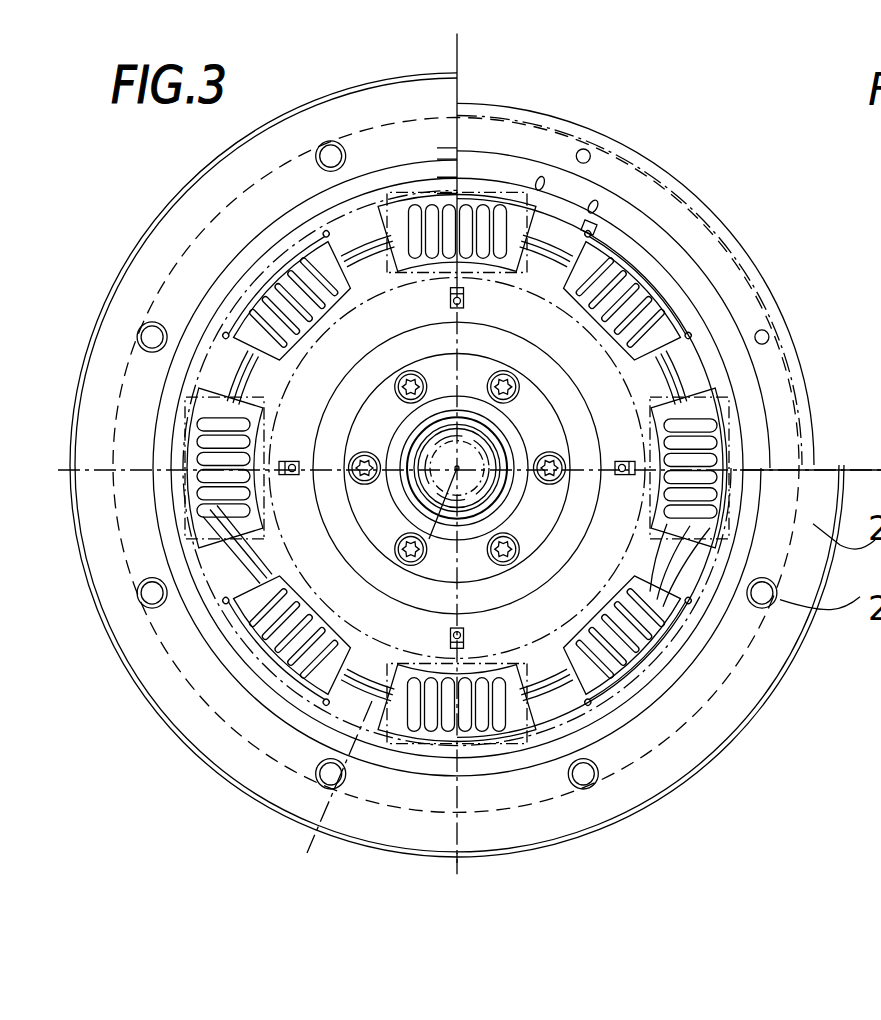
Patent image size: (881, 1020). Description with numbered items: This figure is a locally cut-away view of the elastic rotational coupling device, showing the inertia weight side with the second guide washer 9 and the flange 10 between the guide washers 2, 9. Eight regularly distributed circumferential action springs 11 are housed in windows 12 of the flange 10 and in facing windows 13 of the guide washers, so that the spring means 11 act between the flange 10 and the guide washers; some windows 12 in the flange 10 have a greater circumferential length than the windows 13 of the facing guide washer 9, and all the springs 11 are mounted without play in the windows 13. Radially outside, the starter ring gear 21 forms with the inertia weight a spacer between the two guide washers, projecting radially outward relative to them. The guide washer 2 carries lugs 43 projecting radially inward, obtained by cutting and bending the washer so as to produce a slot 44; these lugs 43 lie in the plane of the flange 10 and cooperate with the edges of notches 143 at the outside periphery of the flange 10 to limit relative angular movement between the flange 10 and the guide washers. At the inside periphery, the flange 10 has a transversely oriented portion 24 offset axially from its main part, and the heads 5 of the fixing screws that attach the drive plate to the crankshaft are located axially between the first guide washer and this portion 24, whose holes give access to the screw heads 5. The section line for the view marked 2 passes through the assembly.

The guide washer 2 is at (427, 455).
The head of fixing screw 5 is at (457, 513).
The second guide washer 9 is at (220, 489).
The flange 10 is at (545, 468).
The circumferential action spring means 11 is at (504, 467).
The housing (window) in flange 12 is at (660, 277).
The housing (window) in guide washer 13 is at (670, 660).
The starter ring gear 21 is at (472, 465).
The transversely oriented portion of flange 24 is at (335, 510).
The lug 43 is at (619, 278).
The slot 44 is at (562, 133).
The notch 143 is at (671, 170).